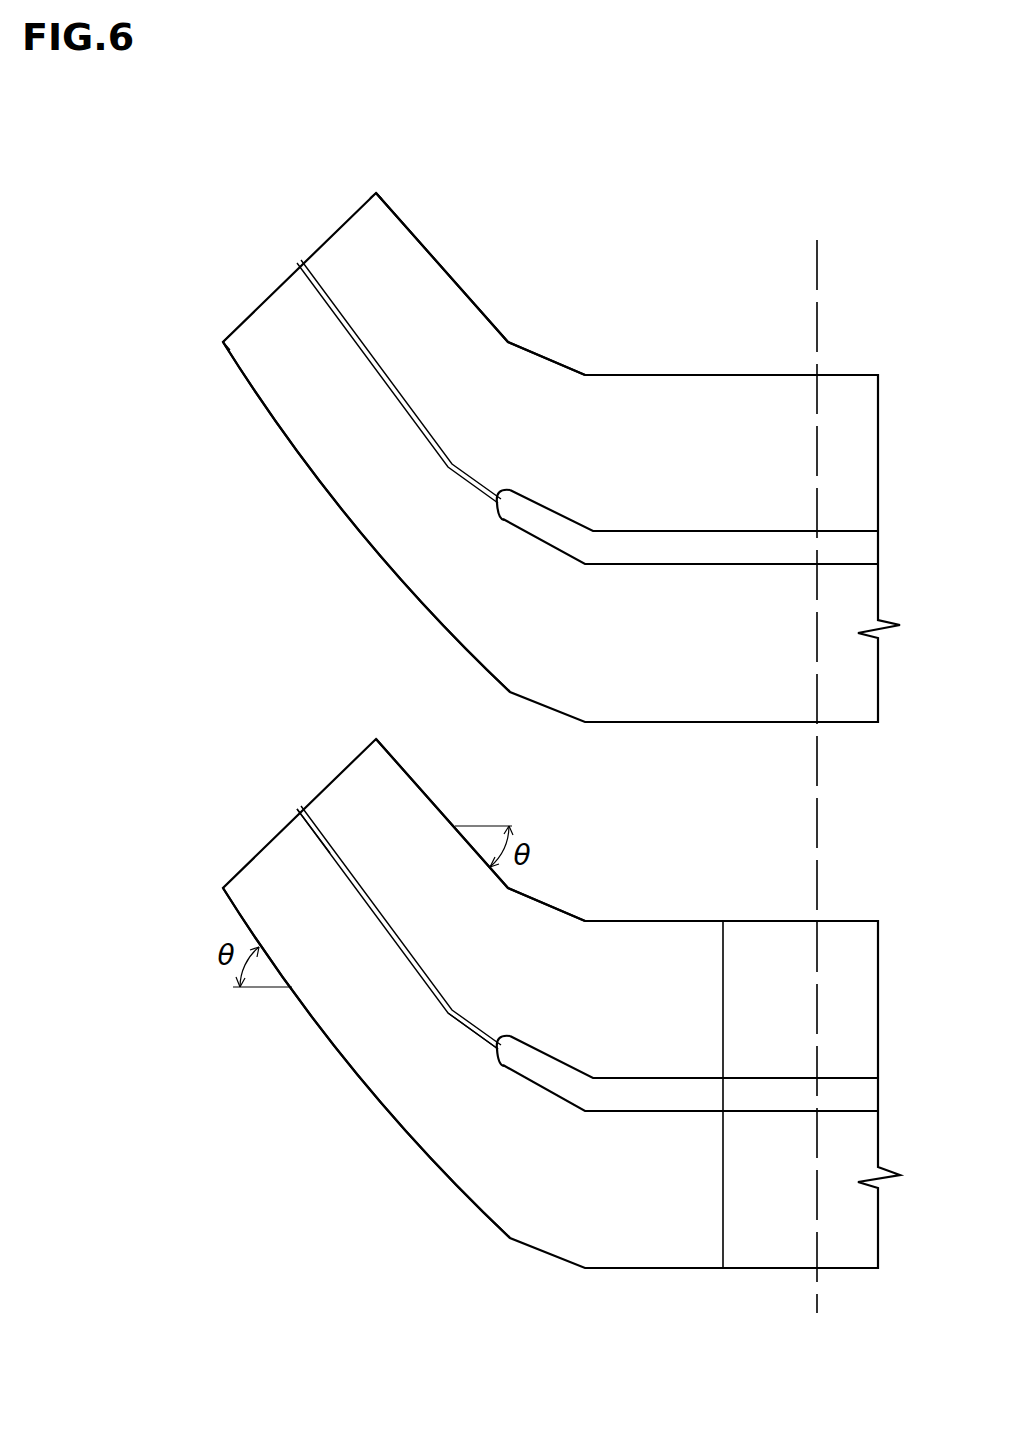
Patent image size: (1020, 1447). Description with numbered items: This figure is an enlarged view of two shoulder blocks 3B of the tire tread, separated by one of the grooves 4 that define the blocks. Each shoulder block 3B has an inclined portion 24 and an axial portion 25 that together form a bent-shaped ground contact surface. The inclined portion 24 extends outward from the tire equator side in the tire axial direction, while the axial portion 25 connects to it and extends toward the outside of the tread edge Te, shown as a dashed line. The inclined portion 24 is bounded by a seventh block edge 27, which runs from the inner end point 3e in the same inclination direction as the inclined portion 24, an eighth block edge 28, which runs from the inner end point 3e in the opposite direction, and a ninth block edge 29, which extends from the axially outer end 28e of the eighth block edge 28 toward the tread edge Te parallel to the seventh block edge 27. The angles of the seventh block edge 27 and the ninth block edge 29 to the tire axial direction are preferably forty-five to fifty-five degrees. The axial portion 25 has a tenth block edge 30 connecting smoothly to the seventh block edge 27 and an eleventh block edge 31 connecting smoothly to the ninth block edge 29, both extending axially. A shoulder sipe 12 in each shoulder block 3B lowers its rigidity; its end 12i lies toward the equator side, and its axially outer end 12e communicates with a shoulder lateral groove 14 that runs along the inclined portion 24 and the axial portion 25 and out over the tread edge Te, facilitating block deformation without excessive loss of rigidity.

The shoulder block 3B is at (282, 638).
The inner end point 3e is at (222, 342).
The groove 4 is at (442, 750).
The shoulder sipe 12 is at (400, 953).
The end of shoulder sipe 12i is at (297, 812).
The axially outer end of shoulder sipe 12e is at (488, 1047).
The shoulder lateral groove 14 is at (522, 1062).
The inclined portion 24 is at (357, 473).
The axial portion 25 is at (638, 642).
The seventh block edge 27 is at (273, 418).
The eighth block edge 28 is at (325, 237).
The axially outer end of eighth block edge 28e is at (376, 190).
The ninth block edge 29 is at (430, 252).
The tenth block edge 30 is at (689, 722).
The eleventh block edge 31 is at (680, 375).
The tread edge Te is at (817, 268).